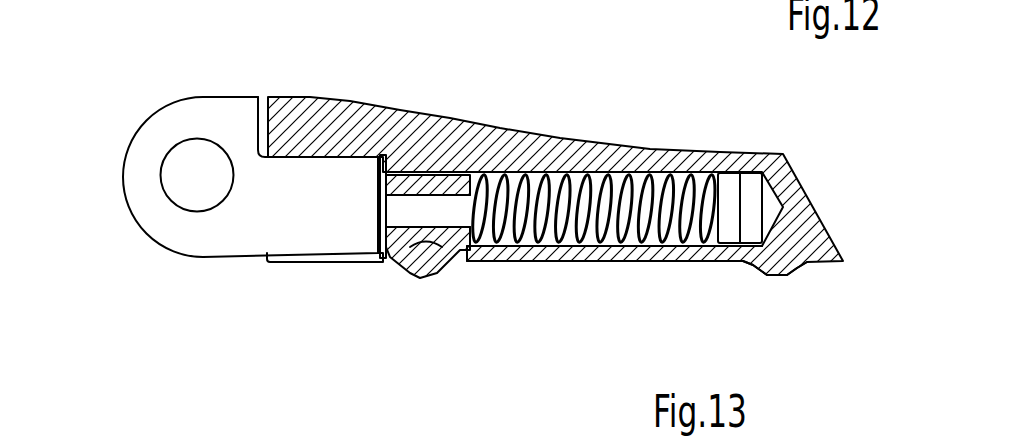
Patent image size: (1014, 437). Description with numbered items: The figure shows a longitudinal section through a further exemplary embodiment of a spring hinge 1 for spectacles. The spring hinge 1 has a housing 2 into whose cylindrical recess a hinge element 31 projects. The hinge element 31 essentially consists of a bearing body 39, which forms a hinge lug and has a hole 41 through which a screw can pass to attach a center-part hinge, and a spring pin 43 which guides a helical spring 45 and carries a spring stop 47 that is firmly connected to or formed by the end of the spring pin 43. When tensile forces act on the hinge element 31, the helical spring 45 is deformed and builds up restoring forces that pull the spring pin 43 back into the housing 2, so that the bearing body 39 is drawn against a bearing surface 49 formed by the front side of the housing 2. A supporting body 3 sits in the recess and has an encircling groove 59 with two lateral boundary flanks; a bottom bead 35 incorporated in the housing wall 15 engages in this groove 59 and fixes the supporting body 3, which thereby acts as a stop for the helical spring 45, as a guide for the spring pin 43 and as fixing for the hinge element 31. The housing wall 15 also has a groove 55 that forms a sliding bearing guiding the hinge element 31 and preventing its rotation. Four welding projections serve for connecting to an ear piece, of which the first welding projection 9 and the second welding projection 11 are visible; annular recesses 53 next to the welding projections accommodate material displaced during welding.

The spring hinge 1 is at (392, 100).
The housing 2 is at (513, 137).
The supporting body 3 is at (380, 187).
The first welding projection 9 is at (427, 273).
The second welding projection 11 is at (792, 273).
The housing wall 15 is at (588, 253).
The hinge element 31 is at (154, 253).
The bottom bead 35 is at (437, 272).
The bearing body 39 is at (147, 168).
The hole 41 is at (195, 163).
The spring pin 43 is at (537, 263).
The helical spring 45 is at (640, 175).
The spring stop 47 is at (727, 200).
The bearing surface 49 is at (254, 96).
The annular recesses 53 is at (390, 262).
The groove 55 is at (268, 266).
The encircling groove 59 is at (430, 170).